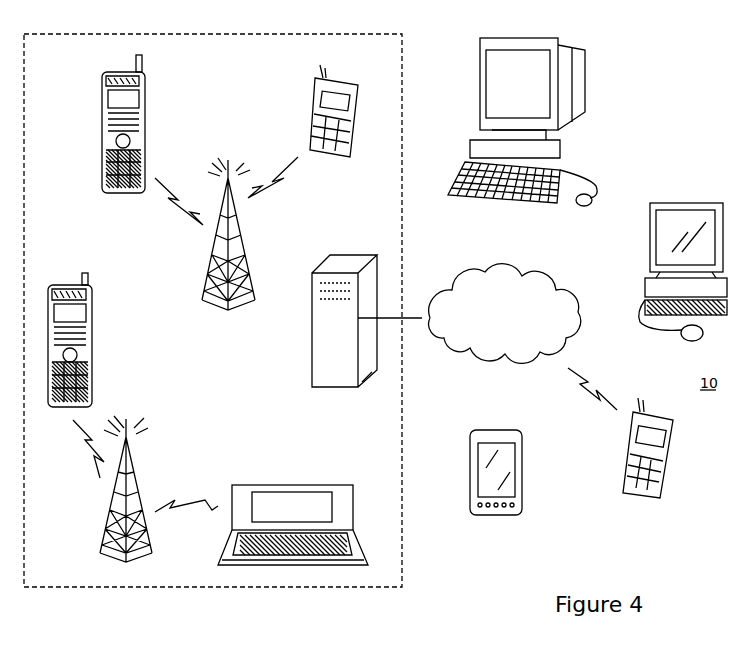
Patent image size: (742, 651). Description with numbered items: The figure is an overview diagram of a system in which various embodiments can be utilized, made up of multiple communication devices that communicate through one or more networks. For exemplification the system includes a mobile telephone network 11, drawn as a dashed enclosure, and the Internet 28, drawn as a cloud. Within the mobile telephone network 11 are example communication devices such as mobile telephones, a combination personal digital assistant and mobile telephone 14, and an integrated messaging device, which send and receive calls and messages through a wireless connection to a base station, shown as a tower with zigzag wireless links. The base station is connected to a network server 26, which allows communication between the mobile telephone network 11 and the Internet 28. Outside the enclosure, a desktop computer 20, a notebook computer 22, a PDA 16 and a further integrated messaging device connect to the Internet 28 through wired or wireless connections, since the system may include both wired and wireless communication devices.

The mobile telephone network 11 is at (50, 66).
The combination personal digital assistant (PDA) and mobile telephone 14 is at (290, 487).
The PDA 16 is at (522, 470).
The desktop computer 20 is at (585, 80).
The notebook computer 22 is at (688, 203).
The network server 26 is at (312, 330).
The Internet 28 is at (528, 272).